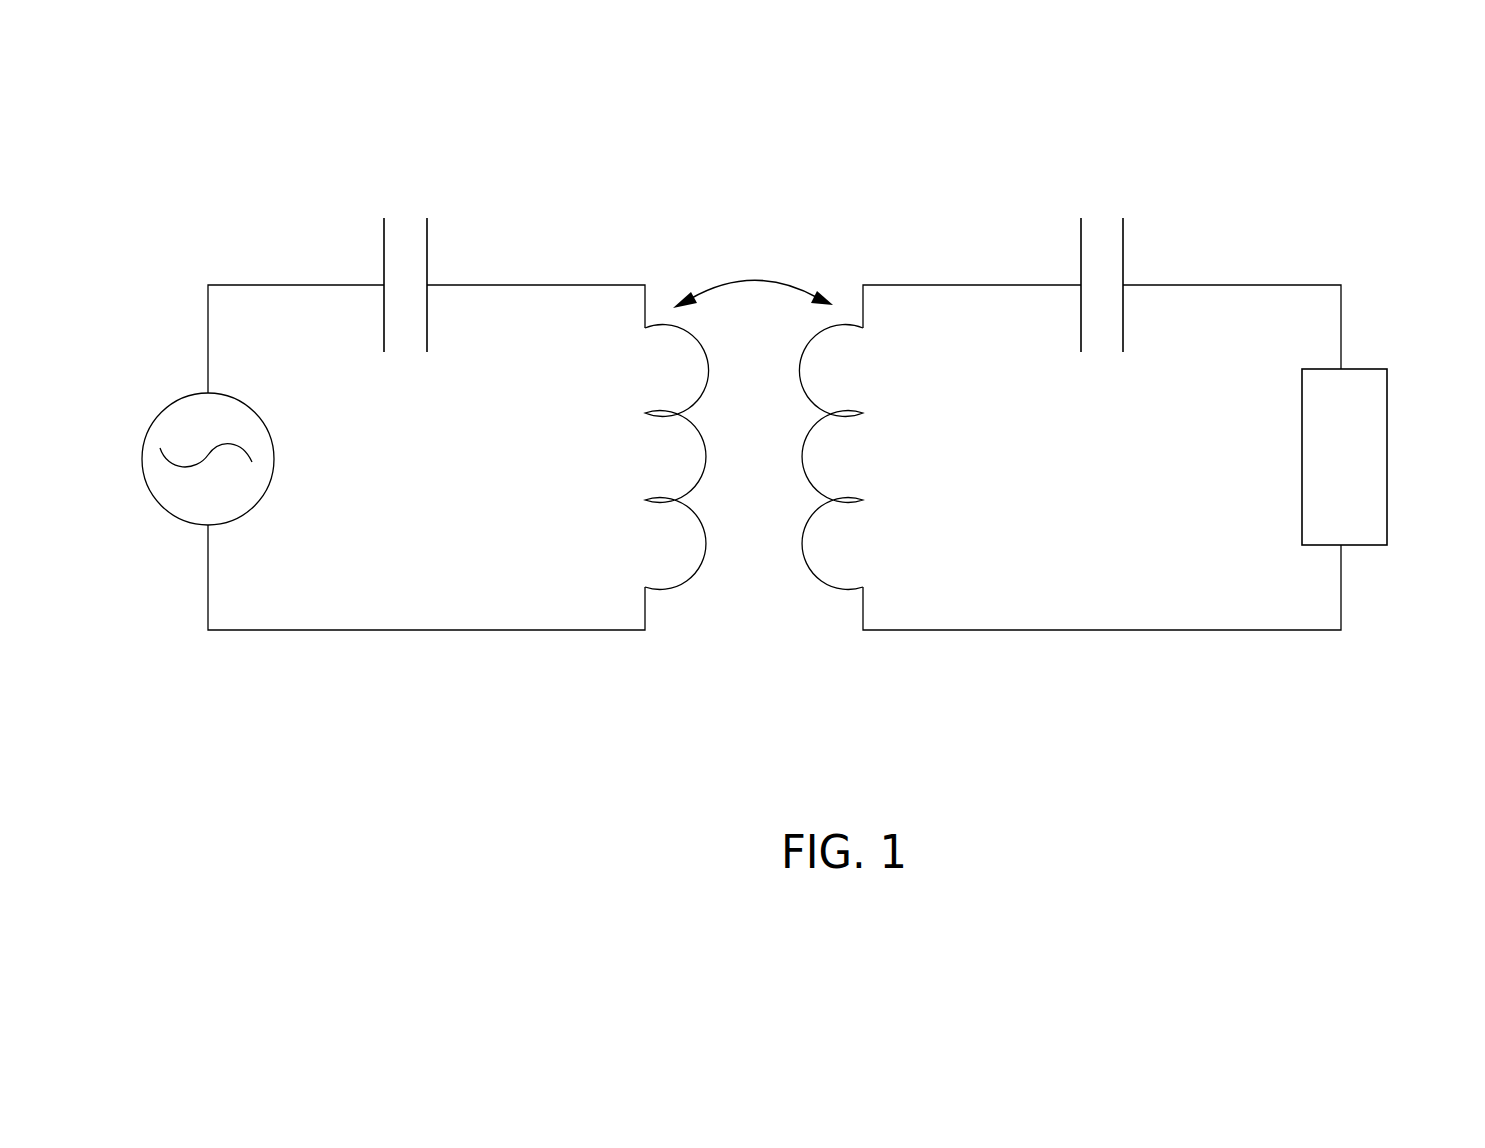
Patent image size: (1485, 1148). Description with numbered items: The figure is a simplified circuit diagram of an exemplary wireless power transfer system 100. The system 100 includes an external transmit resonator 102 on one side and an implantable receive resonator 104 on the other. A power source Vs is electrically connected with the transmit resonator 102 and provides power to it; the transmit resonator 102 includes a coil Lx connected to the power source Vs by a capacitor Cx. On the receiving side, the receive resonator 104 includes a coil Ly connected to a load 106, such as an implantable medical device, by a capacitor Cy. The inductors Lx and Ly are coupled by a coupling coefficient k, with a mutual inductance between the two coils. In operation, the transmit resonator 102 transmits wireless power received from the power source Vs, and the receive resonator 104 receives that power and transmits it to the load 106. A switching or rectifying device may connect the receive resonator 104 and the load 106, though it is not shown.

The wireless power transfer system 100 is at (182, 212).
The external transmit resonator 102 is at (343, 250).
The implantable receive resonator 104 is at (1163, 233).
The load 106 is at (1357, 522).